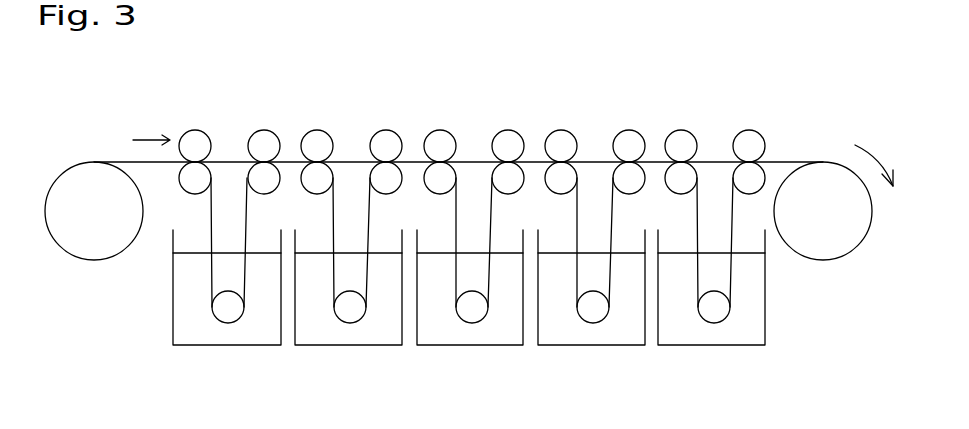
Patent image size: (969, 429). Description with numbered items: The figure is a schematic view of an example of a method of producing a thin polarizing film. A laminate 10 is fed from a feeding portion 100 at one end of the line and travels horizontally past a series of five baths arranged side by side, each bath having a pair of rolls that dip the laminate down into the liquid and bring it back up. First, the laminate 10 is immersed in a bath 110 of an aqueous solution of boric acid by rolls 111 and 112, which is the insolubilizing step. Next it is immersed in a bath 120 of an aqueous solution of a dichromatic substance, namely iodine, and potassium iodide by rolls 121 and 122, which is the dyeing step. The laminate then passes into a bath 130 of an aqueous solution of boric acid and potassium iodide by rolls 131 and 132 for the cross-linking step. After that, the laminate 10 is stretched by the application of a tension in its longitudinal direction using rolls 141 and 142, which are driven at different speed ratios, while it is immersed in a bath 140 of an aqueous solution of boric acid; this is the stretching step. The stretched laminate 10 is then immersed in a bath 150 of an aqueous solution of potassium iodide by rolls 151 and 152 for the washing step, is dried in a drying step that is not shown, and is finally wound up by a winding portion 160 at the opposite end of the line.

The laminate 10 is at (125, 160).
The feeding portion 100 is at (77, 200).
The bath of an aqueous solution of boric acid 110 is at (195, 330).
The roll 111 is at (195, 143).
The roll 112 is at (263, 143).
The bath of an aqueous solution of a dichromatic substance and potassium iodide 120 is at (322, 330).
The roll 121 is at (317, 143).
The roll 122 is at (386, 143).
The bath of an aqueous solution of boric acid and potassium iodide 130 is at (495, 332).
The roll 131 is at (440, 143).
The roll 132 is at (507, 143).
The bath of an aqueous solution of boric acid 140 is at (615, 332).
The roll 141 is at (561, 143).
The roll 142 is at (629, 143).
The bath of an aqueous solution of potassium iodide 150 is at (735, 332).
The roll 151 is at (680, 143).
The roll 152 is at (749, 143).
The winding portion 160 is at (840, 232).